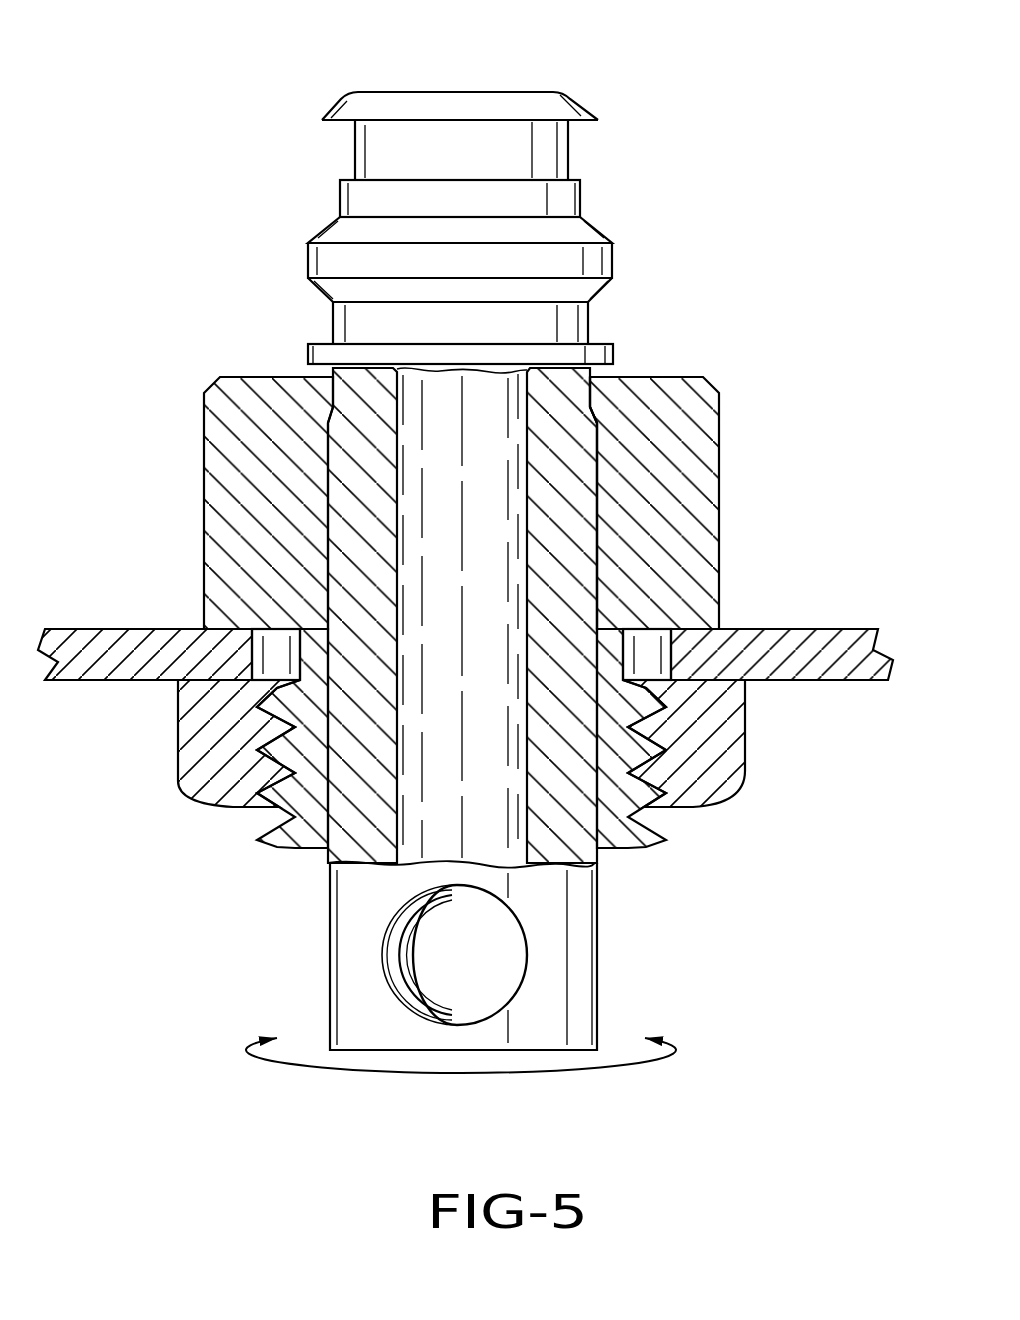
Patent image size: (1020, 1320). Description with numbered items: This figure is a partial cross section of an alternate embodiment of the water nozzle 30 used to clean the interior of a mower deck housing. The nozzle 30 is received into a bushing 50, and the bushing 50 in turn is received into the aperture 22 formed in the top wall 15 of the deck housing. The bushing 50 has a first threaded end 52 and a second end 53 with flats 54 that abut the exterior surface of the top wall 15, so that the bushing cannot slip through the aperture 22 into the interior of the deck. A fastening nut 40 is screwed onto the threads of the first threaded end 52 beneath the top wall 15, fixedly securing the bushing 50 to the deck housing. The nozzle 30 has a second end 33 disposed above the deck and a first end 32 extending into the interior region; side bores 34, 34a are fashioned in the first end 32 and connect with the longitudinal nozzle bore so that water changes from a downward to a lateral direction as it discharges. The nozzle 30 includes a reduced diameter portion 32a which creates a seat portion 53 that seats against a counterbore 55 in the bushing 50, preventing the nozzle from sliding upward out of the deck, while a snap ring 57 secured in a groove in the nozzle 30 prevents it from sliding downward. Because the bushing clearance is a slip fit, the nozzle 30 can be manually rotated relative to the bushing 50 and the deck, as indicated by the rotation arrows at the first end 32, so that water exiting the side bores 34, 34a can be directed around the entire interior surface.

The second end 33 is at (610, 158).
The nozzle 30 is at (590, 321).
The reduced diameter portion 32a is at (622, 367).
The seat portion 53 is at (601, 396).
The snap ring 57 is at (308, 353).
The aperture 22 is at (456, 443).
The counterbore 55 is at (460, 552).
The flats 54 is at (198, 625).
The bushing 50 is at (710, 520).
The top wall 15 is at (805, 632).
The first threaded end 52 is at (252, 823).
The fastening nut 40 is at (677, 790).
The side bore 34 is at (488, 1007).
The side bore 34a is at (466, 978).
The first end 32 is at (506, 1003).